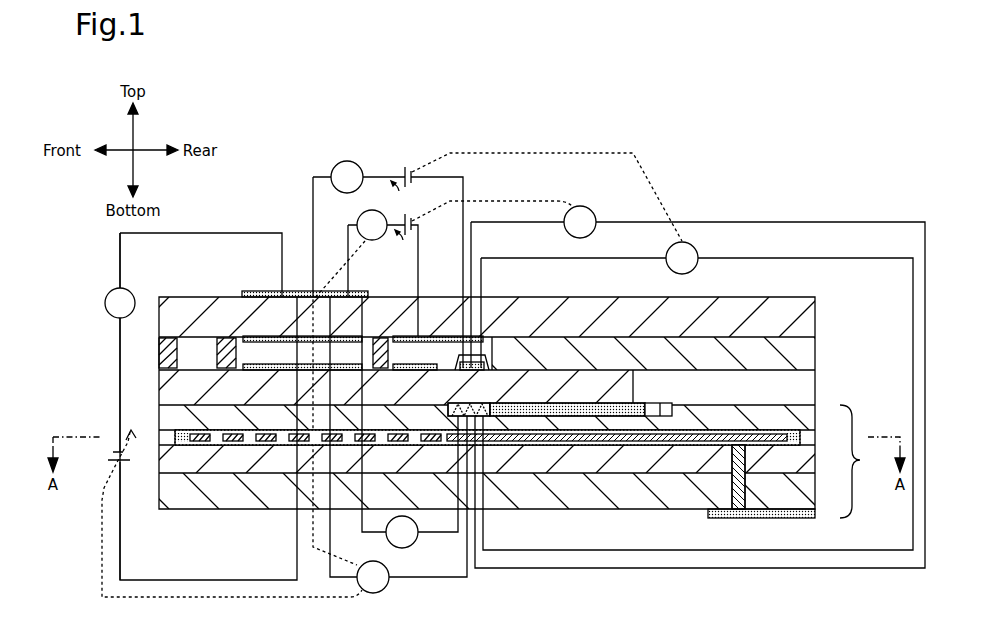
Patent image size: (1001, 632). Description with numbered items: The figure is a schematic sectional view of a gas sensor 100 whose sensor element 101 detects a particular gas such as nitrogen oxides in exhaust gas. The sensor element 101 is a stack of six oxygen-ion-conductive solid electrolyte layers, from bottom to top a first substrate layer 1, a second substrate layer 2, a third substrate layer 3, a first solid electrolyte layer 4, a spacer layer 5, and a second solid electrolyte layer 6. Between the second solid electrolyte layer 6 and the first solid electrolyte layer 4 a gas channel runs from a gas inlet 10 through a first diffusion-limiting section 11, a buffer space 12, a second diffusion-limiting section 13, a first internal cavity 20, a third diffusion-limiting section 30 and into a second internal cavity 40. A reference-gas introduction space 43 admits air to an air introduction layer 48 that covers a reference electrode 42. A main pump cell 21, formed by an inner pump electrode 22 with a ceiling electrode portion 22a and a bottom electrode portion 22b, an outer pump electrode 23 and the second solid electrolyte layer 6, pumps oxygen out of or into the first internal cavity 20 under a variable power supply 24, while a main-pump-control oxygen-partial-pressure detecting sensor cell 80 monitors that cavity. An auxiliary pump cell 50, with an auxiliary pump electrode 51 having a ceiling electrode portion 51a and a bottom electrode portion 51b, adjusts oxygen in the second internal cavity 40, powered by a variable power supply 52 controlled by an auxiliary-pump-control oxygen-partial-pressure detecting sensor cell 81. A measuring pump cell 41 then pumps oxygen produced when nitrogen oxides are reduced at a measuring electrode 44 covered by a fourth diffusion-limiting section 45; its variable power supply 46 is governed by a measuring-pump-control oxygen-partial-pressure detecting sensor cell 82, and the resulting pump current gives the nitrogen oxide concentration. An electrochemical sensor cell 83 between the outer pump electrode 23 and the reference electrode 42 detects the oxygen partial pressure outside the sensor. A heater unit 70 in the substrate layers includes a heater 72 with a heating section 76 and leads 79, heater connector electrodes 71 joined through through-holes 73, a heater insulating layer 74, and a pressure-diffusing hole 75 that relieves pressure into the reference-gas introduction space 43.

The gas sensor 100 is at (757, 152).
The sensor element 101 is at (178, 282).
The first substrate layer 1 is at (814, 492).
The second substrate layer 2 is at (814, 460).
The third substrate layer 3 is at (814, 426).
The first solid electrolyte layer 4 is at (157, 382).
The spacer layer 5 is at (817, 342).
The second solid electrolyte layer 6 is at (817, 319).
The gas inlet 10 is at (158, 352).
The first diffusion-limiting section 11 is at (179, 336).
The buffer space 12 is at (207, 340).
The second diffusion-limiting section 13 is at (228, 340).
The first internal cavity 20 is at (337, 350).
The main pump cell 21 is at (218, 393).
The inner pump electrode 22 is at (296, 300).
The ceiling electrode portion 22a is at (321, 296).
The bottom electrode portion 22b is at (297, 364).
The outer pump electrode 23 is at (260, 291).
The variable power supply 24 is at (113, 457).
The third diffusion-limiting section 30 is at (381, 340).
The second internal cavity 40 is at (396, 336).
The measuring pump cell 41 is at (496, 350).
The reference electrode 42 is at (488, 407).
The reference-gas introduction space 43 is at (815, 392).
The measuring electrode 44 is at (470, 372).
The fourth diffusion-limiting section 45 is at (458, 358).
The variable power supply 46 is at (407, 166).
The air introduction layer 48 is at (638, 403).
The auxiliary pump cell 50 is at (447, 382).
The auxiliary pump electrode 51 is at (448, 336).
The ceiling electrode portion 51a is at (493, 340).
The bottom electrode portion 51b is at (411, 371).
The variable power supply 52 is at (410, 241).
The heater unit 70 is at (862, 461).
The heater connector electrodes 71 is at (803, 518).
The heater 72 is at (490, 500).
The through-holes 73 is at (751, 509).
The heater insulating layer 74 is at (181, 446).
The pressure-diffusing hole 75 is at (668, 410).
The heating section 76 is at (262, 446).
The leads 79 is at (600, 447).
The main-pump-control oxygen-partial-pressure detecting sensor cell 80 is at (395, 587).
The auxiliary-pump-control oxygen-partial-pressure detecting sensor cell 81 is at (726, 224).
The measuring-pump-control oxygen-partial-pressure detecting sensor cell 82 is at (726, 260).
The electrochemical sensor cell 83 is at (423, 534).